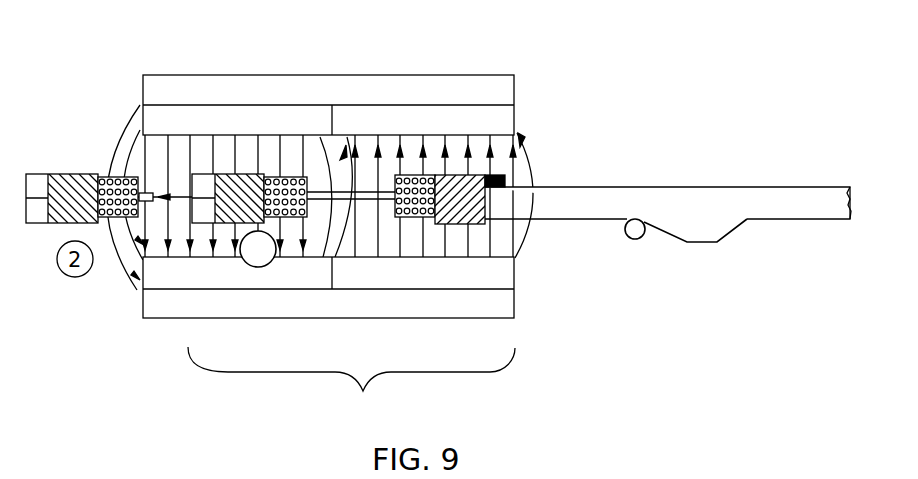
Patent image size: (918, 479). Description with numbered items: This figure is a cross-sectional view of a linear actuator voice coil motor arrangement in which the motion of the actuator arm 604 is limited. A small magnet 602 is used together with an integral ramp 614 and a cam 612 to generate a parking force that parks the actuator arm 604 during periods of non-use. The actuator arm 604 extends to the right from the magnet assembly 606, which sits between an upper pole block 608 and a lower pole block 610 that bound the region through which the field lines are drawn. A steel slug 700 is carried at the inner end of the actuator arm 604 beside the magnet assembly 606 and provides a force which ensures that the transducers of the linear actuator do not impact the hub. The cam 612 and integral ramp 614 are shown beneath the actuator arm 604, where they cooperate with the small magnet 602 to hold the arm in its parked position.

The small magnet 602 is at (207, 197).
The actuator arm 604 is at (643, 187).
The magnet assembly 606 is at (351, 385).
The upper magnet block 608 is at (533, 105).
The lower magnet block 610 is at (528, 300).
The cam 612 is at (636, 239).
The integral ramp 614 is at (717, 242).
The steel slug 700 is at (510, 176).